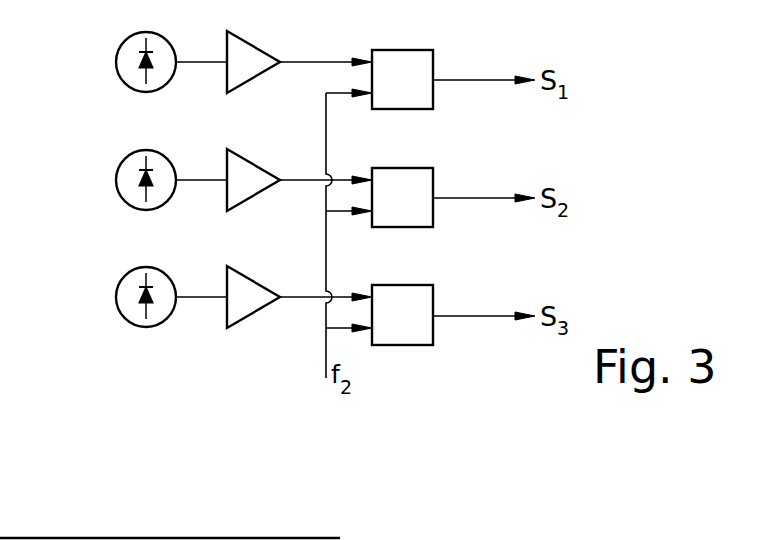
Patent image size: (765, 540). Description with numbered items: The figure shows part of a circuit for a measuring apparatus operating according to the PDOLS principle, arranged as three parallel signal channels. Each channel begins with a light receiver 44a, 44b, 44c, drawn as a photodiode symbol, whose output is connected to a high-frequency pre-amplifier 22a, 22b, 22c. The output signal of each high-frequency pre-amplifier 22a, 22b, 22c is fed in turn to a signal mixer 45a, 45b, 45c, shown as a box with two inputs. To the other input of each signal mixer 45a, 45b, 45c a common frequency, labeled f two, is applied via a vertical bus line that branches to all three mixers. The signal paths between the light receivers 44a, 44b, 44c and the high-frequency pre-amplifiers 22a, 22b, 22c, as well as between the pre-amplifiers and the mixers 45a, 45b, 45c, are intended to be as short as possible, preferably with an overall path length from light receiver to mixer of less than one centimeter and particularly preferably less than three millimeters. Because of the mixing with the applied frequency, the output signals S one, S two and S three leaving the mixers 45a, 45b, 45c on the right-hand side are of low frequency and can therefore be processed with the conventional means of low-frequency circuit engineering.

The light receiver 44a is at (128, 47).
The light receiver 44b is at (128, 166).
The light receiver 44c is at (128, 282).
The high-frequency pre-amplifier 22a is at (250, 52).
The high-frequency pre-amplifier 22b is at (250, 170).
The high-frequency pre-amplifier 22c is at (250, 287).
The signal mixer 45a is at (394, 60).
The signal mixer 45b is at (393, 182).
The signal mixer 45c is at (393, 293).